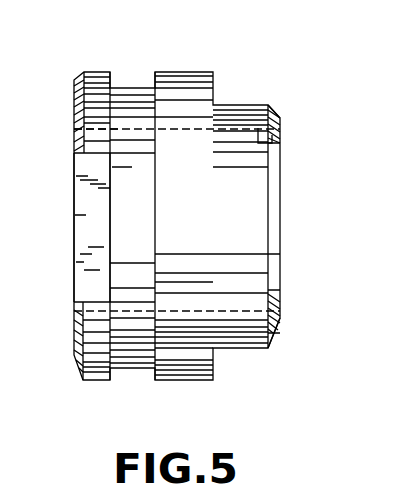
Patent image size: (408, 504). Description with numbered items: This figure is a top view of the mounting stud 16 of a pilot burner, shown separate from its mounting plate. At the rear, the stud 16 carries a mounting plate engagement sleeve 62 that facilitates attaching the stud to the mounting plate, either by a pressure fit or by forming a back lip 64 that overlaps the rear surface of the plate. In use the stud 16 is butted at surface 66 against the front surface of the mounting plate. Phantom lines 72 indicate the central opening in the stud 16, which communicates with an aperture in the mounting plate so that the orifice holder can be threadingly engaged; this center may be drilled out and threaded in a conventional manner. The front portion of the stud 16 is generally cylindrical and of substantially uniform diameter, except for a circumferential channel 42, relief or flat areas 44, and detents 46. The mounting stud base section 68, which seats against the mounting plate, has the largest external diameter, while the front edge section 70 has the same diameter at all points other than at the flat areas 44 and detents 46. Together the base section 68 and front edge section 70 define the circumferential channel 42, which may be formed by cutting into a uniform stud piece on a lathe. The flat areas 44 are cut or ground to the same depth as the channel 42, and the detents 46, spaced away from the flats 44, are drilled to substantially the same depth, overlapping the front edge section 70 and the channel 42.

The mounting stud 16 is at (243, 63).
The circumferential channel 42 is at (132, 83).
The flat areas 44 is at (87, 213).
The detents 46 is at (117, 72).
The mounting plate engagement sleeve 62 is at (263, 105).
The back lip 64 is at (280, 325).
The surface 66 is at (213, 88).
The mounting stud base section 68 is at (187, 82).
The front edge section 70 is at (97, 127).
The phantom lines 72 is at (283, 145).